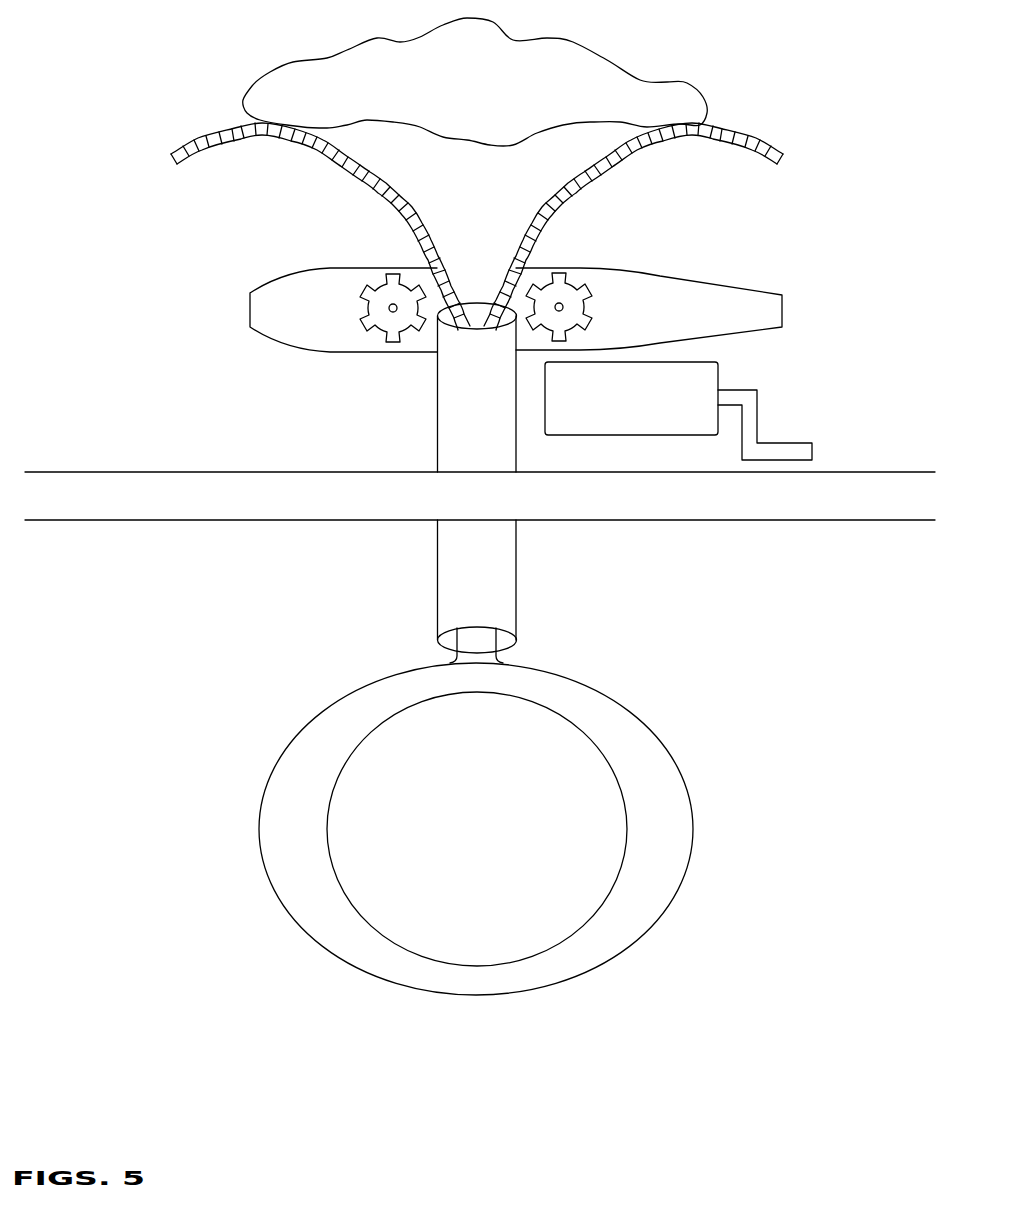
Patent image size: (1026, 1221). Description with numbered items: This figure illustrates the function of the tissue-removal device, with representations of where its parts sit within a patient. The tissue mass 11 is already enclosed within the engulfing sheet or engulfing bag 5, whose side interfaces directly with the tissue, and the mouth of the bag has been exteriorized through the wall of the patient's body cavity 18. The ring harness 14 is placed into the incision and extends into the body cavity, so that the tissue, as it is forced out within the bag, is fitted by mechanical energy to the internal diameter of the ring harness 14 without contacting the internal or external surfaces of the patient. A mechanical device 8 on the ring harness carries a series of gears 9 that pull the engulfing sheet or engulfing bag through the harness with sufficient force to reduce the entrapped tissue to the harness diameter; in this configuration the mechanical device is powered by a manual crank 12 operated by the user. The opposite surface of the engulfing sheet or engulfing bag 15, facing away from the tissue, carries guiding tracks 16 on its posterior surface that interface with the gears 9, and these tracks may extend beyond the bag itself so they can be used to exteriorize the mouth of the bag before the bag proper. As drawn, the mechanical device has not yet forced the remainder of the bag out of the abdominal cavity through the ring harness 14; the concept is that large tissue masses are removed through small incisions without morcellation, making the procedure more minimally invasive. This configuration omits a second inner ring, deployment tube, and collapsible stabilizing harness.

The engulfing sheet or engulfing bag 5 is at (686, 813).
The mechanical device on the ring harness 8 is at (631, 398).
The gears 9 is at (366, 306).
The tissue mass 11 is at (477, 829).
The manual crank 12 is at (792, 444).
The ring harness 14 is at (477, 483).
The opposite surface of the engulfing sheet or engulfing bag 15 is at (745, 850).
The guiding tracks 16 is at (283, 143).
The wall of the patient's body cavity 18 is at (480, 496).